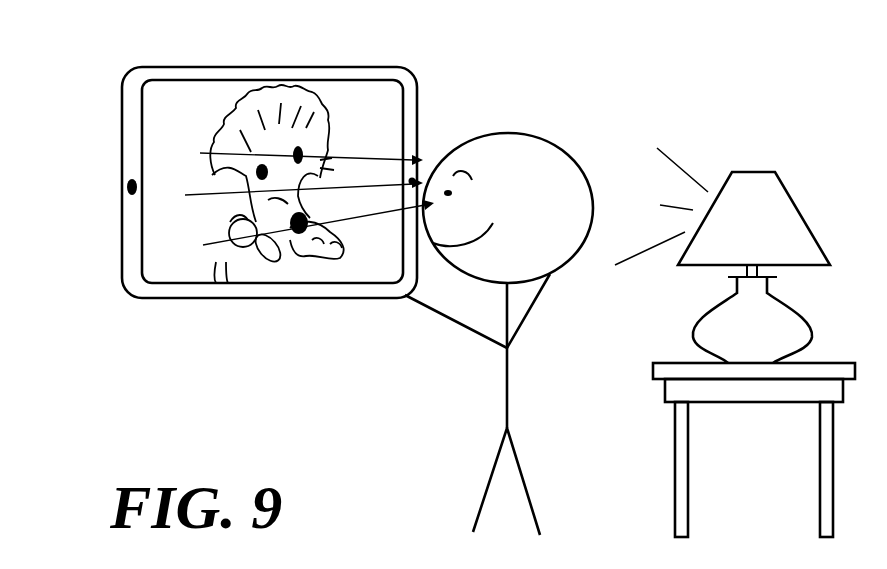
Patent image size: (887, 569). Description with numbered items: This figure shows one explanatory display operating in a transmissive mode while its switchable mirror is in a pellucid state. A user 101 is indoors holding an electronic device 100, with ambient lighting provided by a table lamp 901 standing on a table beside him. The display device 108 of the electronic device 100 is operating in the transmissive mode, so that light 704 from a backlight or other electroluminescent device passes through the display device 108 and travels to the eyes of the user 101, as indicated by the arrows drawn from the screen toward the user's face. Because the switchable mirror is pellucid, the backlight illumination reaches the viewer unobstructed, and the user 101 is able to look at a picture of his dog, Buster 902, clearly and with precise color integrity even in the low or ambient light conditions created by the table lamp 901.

The electronic device 100 is at (98, 110).
The display device 108 is at (167, 263).
The Buster 902 is at (245, 92).
The light 704 is at (363, 157).
The user 101 is at (509, 388).
The table lamp 901 is at (805, 220).